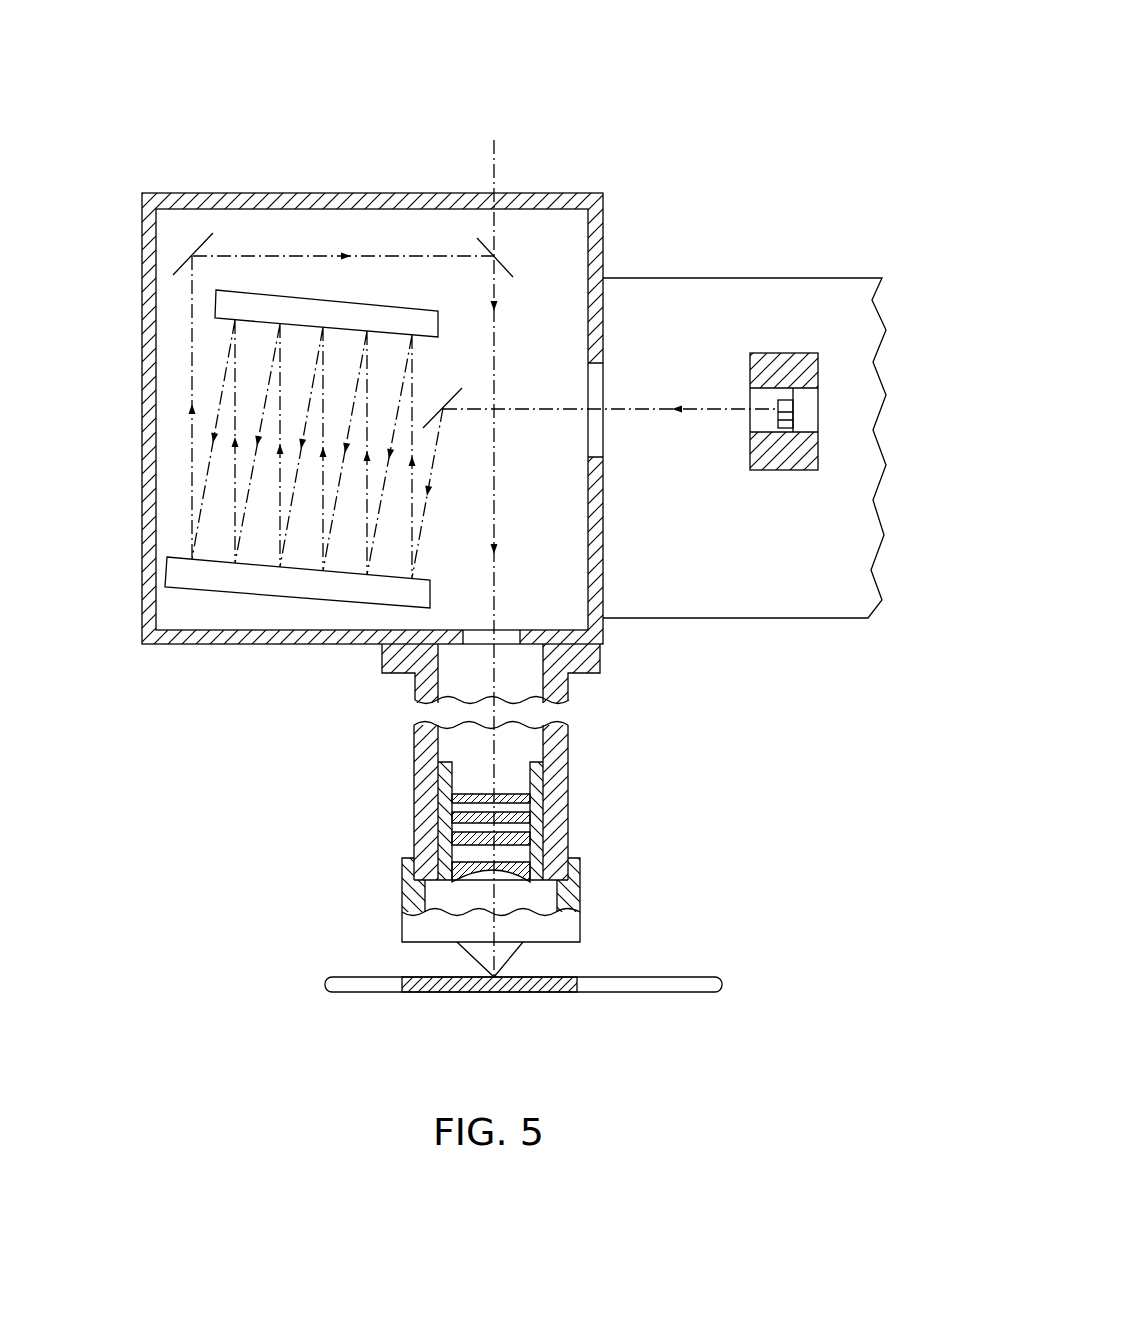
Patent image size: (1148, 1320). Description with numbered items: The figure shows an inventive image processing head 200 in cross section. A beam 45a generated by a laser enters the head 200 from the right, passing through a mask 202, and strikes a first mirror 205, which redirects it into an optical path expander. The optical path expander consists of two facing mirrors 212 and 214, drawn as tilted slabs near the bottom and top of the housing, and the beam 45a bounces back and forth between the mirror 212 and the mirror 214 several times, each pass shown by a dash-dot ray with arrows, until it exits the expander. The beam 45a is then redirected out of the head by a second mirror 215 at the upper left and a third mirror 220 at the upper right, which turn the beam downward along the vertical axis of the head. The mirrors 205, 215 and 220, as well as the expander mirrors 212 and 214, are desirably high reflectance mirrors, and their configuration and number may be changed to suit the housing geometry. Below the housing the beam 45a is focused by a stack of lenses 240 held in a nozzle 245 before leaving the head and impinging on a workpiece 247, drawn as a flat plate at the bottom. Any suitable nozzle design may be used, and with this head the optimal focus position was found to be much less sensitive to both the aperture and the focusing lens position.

The image processing head 200 is at (514, 488).
The second mirror 215 is at (190, 257).
The third mirror 220 is at (506, 262).
The mirror of optical path expander 214 is at (384, 304).
The mirror of optical path expander 212 is at (277, 598).
The first mirror 205 is at (454, 388).
The beam 45a is at (700, 407).
The mask 202 is at (778, 353).
The nozzle 245 is at (568, 763).
The lenses 240 is at (443, 835).
The workpiece 247 is at (421, 993).